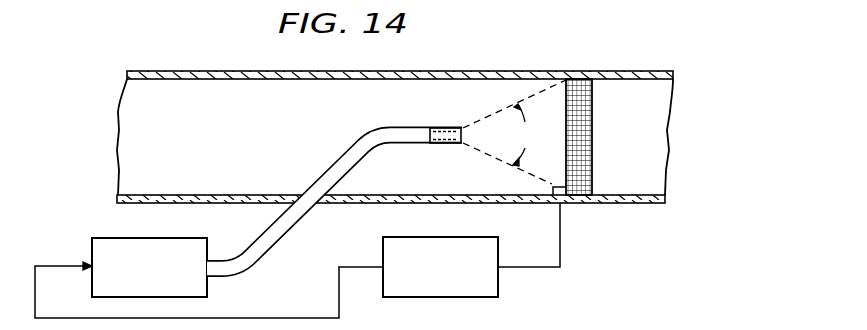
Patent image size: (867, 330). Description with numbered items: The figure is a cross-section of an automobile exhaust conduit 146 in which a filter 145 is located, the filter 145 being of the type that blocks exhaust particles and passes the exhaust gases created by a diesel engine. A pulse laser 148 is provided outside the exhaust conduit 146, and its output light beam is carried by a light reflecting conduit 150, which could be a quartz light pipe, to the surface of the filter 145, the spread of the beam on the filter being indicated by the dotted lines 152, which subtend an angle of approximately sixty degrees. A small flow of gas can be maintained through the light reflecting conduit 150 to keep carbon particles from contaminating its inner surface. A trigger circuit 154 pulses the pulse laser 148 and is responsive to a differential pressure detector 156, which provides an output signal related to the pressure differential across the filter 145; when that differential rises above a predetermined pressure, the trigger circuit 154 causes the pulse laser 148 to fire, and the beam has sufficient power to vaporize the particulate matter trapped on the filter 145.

The filter 145 is at (578, 82).
The exhaust conduit 146 is at (654, 72).
The pulse laser 148 is at (90, 249).
The light reflecting conduit 150 is at (389, 146).
The dotted lines 152 is at (514, 132).
The trigger circuit 154 is at (493, 296).
The differential pressure detector 156 is at (565, 190).